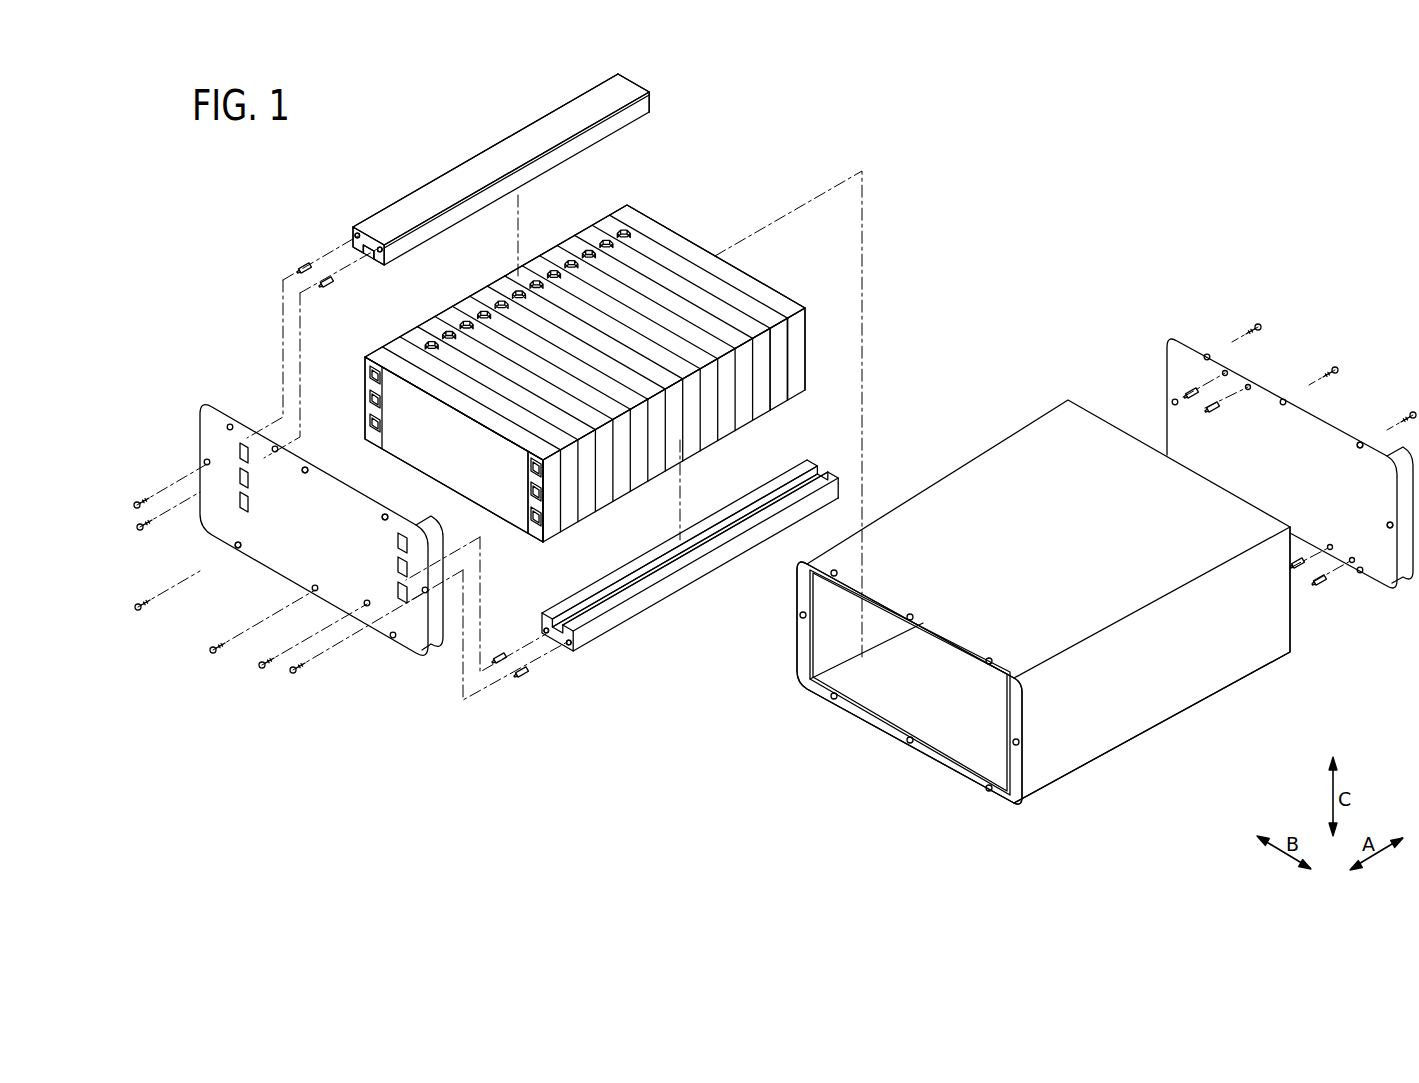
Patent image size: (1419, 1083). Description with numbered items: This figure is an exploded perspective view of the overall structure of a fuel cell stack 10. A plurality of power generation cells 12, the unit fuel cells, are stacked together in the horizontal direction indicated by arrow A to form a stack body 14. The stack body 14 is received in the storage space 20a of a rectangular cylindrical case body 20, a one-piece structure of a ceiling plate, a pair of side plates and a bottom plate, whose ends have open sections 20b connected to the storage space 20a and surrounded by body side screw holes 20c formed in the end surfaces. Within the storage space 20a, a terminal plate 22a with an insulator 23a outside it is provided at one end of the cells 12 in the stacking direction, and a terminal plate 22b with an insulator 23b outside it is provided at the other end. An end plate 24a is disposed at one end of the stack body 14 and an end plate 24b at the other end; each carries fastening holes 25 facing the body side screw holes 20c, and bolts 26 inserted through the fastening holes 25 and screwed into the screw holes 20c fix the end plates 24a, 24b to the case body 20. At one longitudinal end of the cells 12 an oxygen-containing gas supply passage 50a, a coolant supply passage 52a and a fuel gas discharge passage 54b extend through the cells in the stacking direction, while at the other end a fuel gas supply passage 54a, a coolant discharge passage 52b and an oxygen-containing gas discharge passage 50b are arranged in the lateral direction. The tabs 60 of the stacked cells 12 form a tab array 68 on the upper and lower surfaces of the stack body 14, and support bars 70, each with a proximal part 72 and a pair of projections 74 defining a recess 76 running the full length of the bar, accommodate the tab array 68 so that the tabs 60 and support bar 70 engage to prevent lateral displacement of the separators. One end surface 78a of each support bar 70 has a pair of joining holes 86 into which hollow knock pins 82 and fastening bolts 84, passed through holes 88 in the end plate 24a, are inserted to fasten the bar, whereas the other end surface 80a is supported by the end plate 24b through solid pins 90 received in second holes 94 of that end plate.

The fuel cell stack 10 is at (1002, 165).
The power generation cell 12 is at (591, 240).
The stack body 14 is at (684, 227).
The case body 20 is at (1002, 433).
The storage space 20a is at (1154, 677).
The open section 20b is at (955, 748).
The body side screw hole 20c is at (830, 697).
The terminal plate 22a is at (570, 519).
The terminal plate 22b is at (781, 398).
The insulator 23a is at (556, 523).
The insulator 23b is at (801, 379).
The end plate 24a is at (270, 570).
The end plate 24b is at (1150, 356).
The fastening hole 25 is at (241, 543).
The bolt 26 is at (136, 610).
The oxygen-containing gas supply passage 50a is at (369, 375).
The oxygen-containing gas discharge passage 50b is at (530, 516).
The coolant supply passage 52a is at (369, 401).
The coolant discharge passage 52b is at (530, 490).
The fuel gas supply passage 54a is at (530, 466).
The fuel gas discharge passage 54b is at (369, 427).
The tab 60 is at (450, 332).
The tab array 68 is at (625, 235).
The support bar 70 is at (448, 173).
The proximal part 72 is at (507, 150).
The projection 74 is at (354, 252).
The recess 76 is at (372, 256).
The one end surface 78a is at (356, 225).
The another end surface 80a is at (648, 82).
The hollow knock pin 82 is at (323, 284).
The fastening bolt 84 is at (139, 530).
The joining hole 86 is at (543, 631).
The hole 88 is at (252, 447).
The solid pin 90 is at (1191, 399).
The second hole 94 is at (1248, 392).